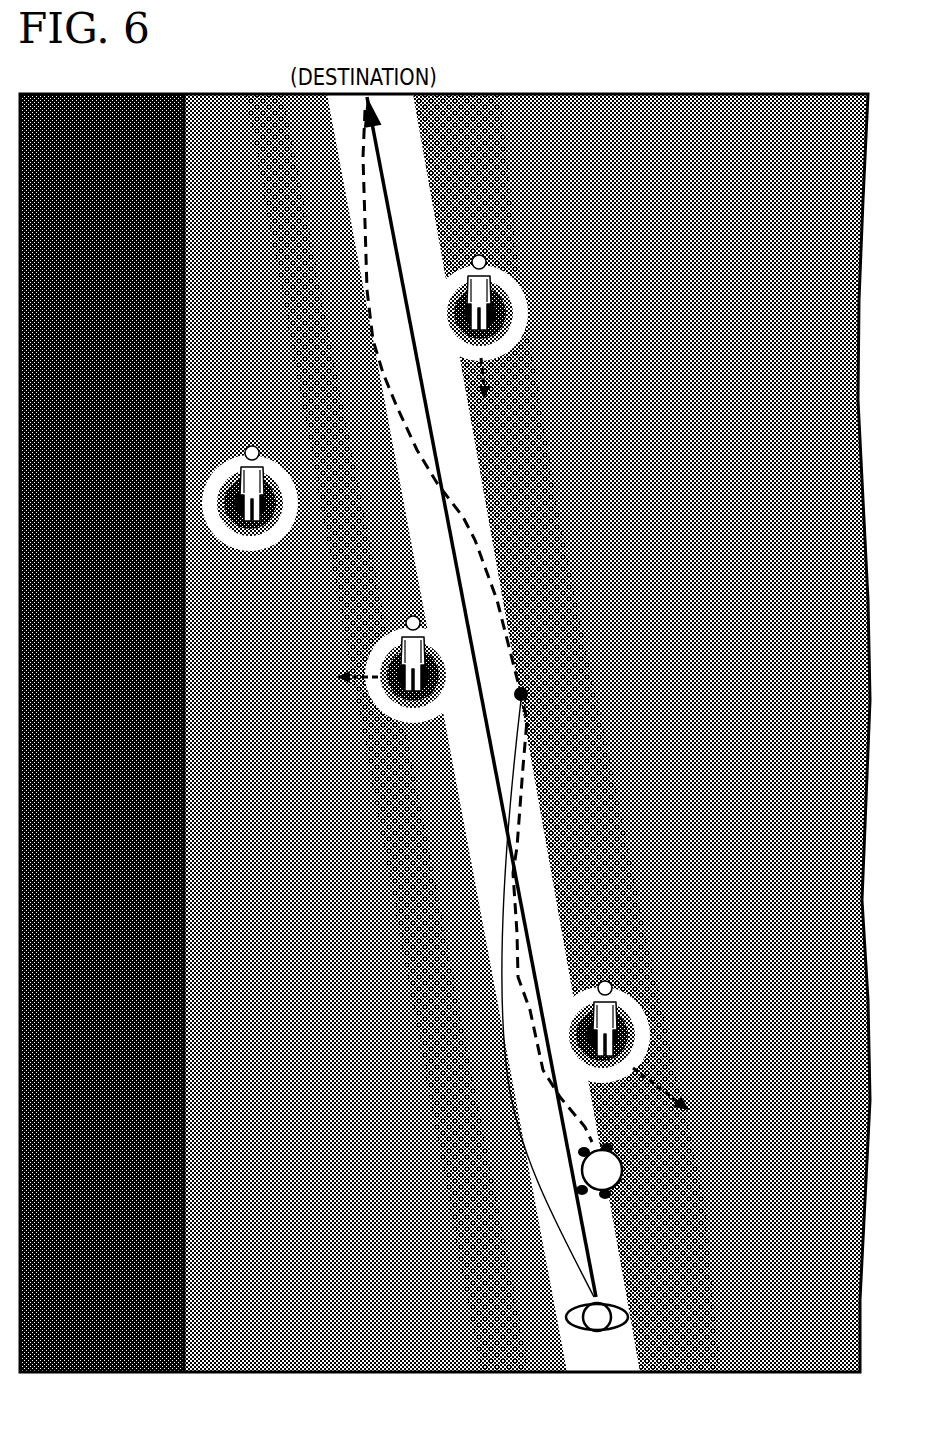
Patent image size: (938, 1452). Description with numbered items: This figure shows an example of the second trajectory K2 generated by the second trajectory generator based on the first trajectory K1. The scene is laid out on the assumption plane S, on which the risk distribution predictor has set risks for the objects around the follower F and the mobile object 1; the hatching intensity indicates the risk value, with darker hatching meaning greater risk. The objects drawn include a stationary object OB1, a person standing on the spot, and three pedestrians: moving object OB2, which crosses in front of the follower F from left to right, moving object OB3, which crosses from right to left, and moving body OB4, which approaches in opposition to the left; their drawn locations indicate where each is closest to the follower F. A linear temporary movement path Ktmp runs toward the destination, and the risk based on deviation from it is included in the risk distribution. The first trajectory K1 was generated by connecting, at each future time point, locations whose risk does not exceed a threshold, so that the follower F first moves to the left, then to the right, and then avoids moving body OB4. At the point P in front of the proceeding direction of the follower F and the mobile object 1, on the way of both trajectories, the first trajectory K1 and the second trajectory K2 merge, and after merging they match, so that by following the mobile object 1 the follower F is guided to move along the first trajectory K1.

The mobile object 1 is at (623, 1170).
The follower F is at (629, 1317).
The point P is at (529, 694).
The first trajectory K1 is at (548, 1230).
The second trajectory K2 is at (585, 1125).
The temporary movement path Ktmp is at (431, 431).
The stationary object OB1 is at (251, 445).
The moving object OB2 is at (605, 980).
The moving object OB3 is at (413, 615).
The moving body OB4 is at (479, 254).
The assumption plane S is at (717, 450).